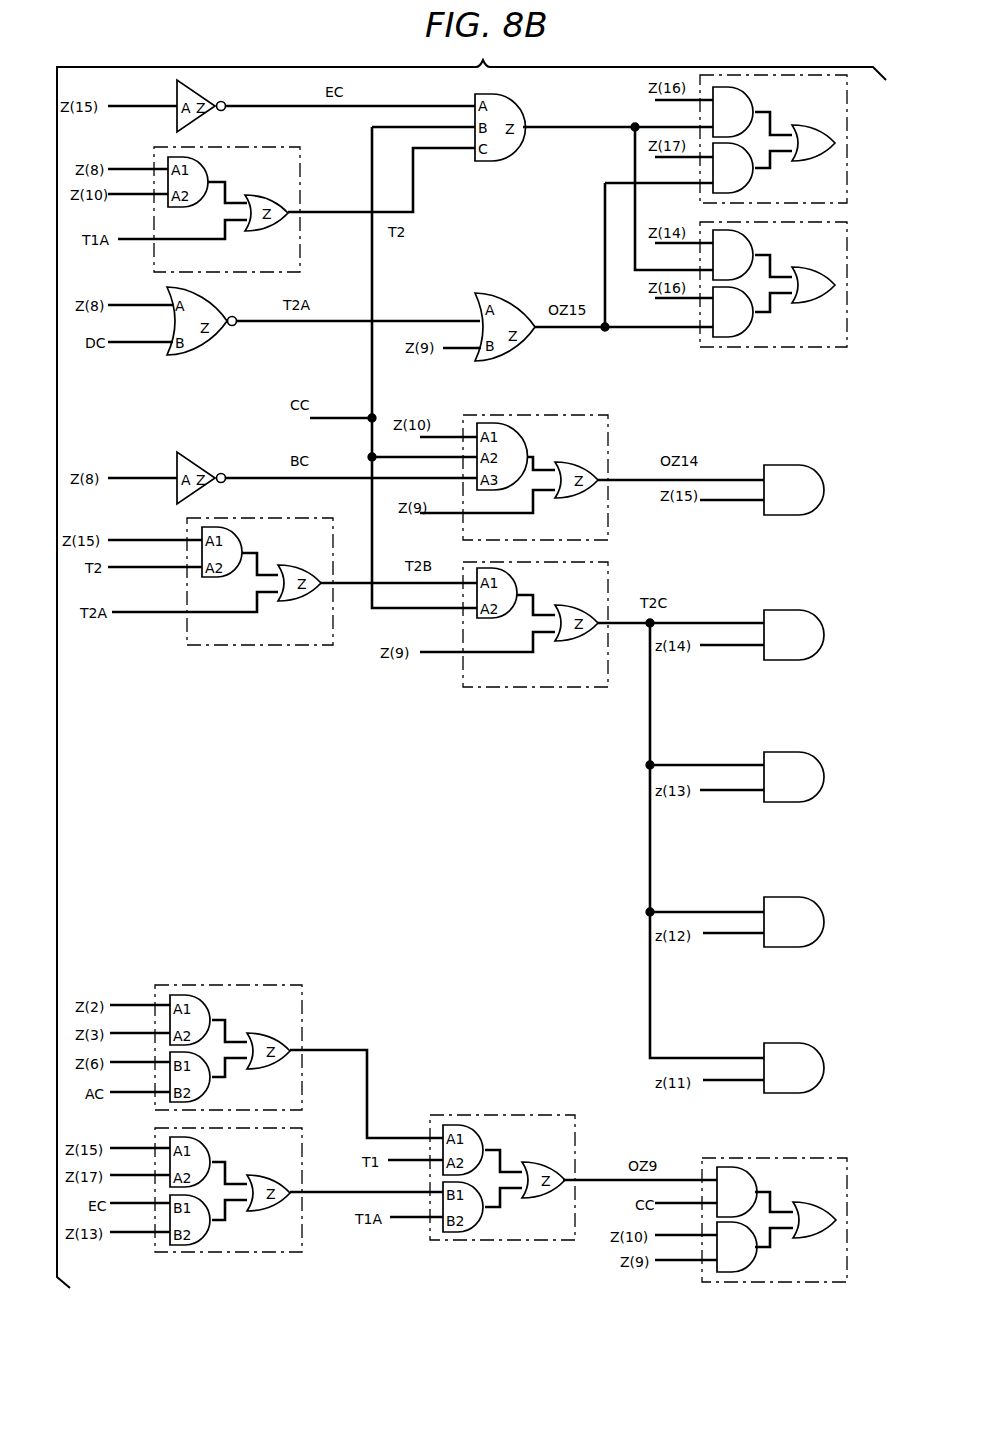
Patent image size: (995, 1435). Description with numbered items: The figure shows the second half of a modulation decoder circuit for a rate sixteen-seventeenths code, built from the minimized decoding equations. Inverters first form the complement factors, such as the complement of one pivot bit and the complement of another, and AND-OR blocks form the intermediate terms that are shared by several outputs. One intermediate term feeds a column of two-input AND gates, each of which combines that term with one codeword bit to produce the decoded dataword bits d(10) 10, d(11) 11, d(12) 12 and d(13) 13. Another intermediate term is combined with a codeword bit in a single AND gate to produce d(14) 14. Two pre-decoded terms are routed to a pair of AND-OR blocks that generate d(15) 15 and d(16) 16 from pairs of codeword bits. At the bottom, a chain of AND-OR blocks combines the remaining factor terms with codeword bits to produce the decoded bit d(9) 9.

The decoded dataword output bit d 16 is at (837, 143).
The decoded dataword output bit d 15 is at (837, 285).
The decoded dataword output bit d 14 is at (824, 490).
The decoded dataword output bit d 13 is at (824, 635).
The decoded dataword output bit d 12 is at (824, 778).
The decoded dataword output bit d 11 is at (824, 923).
The decoded dataword output bit d 10 is at (824, 1068).
The decoded dataword output bit d 9 is at (837, 1220).